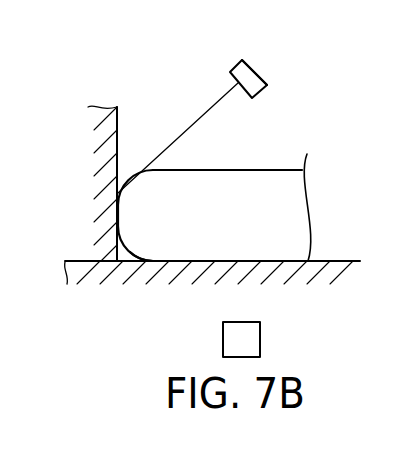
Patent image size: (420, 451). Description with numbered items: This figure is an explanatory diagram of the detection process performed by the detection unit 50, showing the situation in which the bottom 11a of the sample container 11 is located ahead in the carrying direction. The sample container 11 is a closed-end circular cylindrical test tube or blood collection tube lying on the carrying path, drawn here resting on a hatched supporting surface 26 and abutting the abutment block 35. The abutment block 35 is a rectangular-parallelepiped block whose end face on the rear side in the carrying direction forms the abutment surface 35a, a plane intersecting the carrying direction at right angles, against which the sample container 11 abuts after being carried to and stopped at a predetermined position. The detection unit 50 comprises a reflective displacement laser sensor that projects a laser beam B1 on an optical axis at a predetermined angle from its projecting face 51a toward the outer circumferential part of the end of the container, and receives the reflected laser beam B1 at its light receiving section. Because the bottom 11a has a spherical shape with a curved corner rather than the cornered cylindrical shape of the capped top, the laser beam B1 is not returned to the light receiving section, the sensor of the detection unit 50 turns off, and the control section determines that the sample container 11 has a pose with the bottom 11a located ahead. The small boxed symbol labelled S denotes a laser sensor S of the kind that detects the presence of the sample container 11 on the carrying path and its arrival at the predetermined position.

The sample container 11 is at (273, 170).
The bottom 11a is at (117, 262).
The floor / placement surface 26 is at (345, 260).
The abutment block 35 is at (86, 183).
The abutment surface 35a is at (117, 133).
The detection unit 50 is at (258, 93).
The sensor emitting face 51a is at (241, 61).
The laser beam B1 is at (177, 138).
The laser sensor S is at (260, 340).